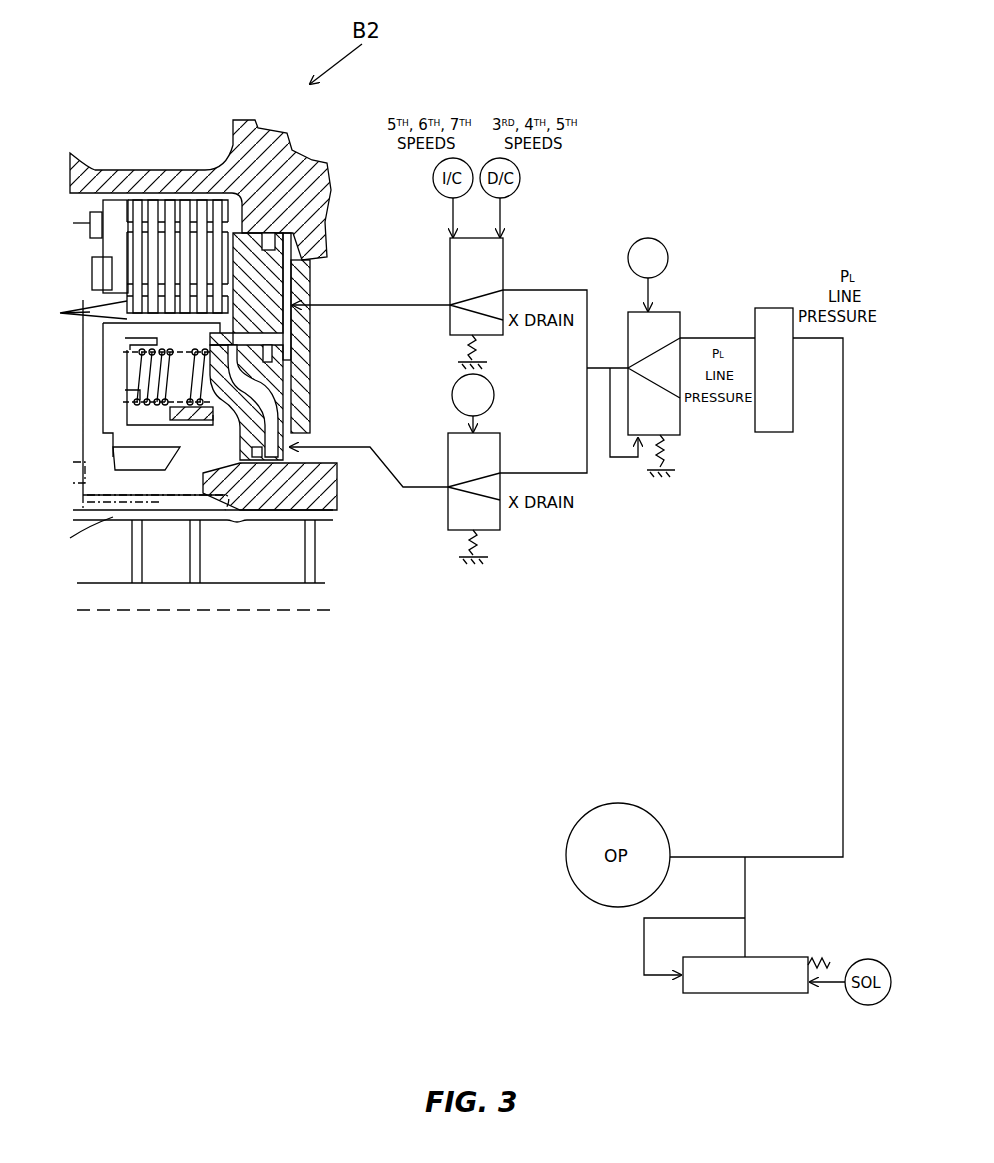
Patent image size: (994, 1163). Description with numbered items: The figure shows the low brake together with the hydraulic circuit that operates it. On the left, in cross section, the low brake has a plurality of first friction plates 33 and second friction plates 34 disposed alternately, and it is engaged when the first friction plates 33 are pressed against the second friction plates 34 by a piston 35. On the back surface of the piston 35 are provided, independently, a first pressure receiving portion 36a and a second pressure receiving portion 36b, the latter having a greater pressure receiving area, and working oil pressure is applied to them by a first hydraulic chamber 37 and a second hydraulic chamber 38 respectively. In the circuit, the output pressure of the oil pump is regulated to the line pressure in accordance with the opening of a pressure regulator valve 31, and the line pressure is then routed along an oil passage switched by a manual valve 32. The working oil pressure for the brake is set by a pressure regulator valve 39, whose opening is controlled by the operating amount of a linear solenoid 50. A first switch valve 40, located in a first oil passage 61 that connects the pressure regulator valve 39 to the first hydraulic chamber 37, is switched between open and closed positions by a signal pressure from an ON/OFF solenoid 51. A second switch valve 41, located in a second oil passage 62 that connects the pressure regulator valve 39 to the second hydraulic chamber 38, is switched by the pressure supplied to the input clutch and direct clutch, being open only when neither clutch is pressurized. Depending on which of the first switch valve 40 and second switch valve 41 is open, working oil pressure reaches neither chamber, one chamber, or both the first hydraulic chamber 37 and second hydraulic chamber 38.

The pressure regulator valve 31 is at (710, 997).
The manual valve 32 is at (773, 308).
The first friction plates 33 is at (170, 200).
The second friction plates 34 is at (82, 312).
The piston 35 is at (252, 263).
The first pressure receiving portion 36a is at (293, 433).
The second pressure receiving portion 36b is at (300, 333).
The first hydraulic chamber 37 is at (283, 437).
The second hydraulic chamber 38 is at (293, 247).
The pressure regulator valve 39 is at (668, 310).
The first switch valve 40 is at (498, 447).
The second switch valve 41 is at (503, 241).
The linear solenoid 50 is at (642, 238).
The ON/OFF solenoid 51 is at (494, 393).
The first oil passage 61 is at (570, 474).
The second oil passage 62 is at (558, 290).